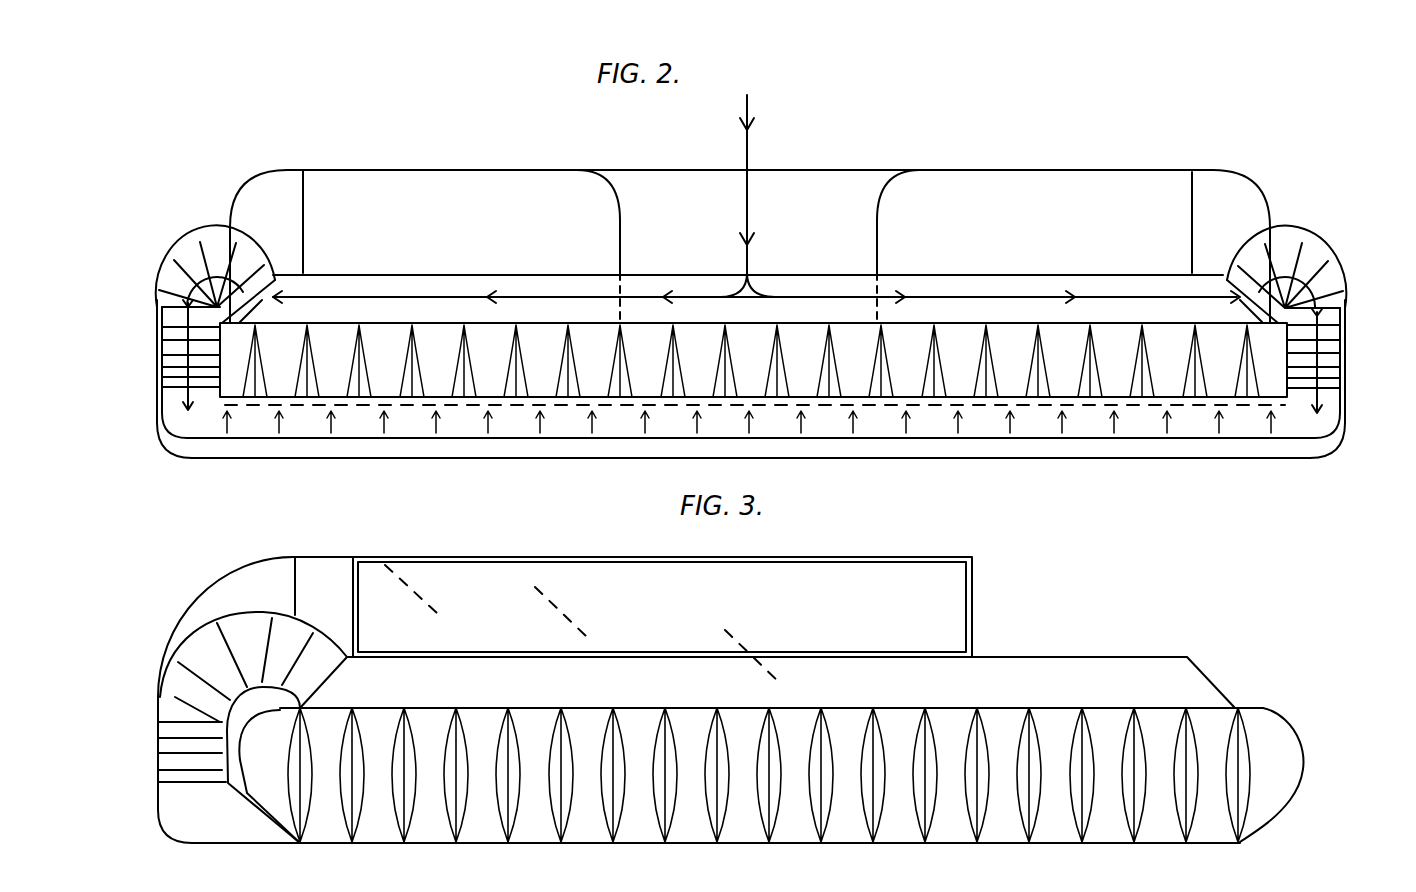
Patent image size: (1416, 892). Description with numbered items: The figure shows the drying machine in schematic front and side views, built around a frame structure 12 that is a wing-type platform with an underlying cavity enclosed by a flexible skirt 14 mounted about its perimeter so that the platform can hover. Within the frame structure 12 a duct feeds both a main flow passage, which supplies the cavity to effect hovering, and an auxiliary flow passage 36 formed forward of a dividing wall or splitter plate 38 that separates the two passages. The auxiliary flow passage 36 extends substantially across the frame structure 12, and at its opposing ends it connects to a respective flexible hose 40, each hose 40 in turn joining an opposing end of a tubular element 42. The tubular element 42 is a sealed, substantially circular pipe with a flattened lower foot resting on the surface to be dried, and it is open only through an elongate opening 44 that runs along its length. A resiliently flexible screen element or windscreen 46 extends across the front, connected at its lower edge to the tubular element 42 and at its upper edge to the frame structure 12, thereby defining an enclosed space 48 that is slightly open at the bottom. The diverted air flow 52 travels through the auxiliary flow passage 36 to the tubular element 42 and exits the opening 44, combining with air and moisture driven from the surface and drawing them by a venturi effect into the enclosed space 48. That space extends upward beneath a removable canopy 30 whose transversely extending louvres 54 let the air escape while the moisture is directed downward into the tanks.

In FIG. 3, the frame structure 12 is at (1140, 692).
In FIG. 2, the flexible skirt 14 is at (767, 366).
In FIG. 3, the flexible skirt 14 is at (285, 765).
In FIG. 3, the removable canopy 30 is at (903, 557).
In FIG. 2, the auxiliary flow passage 36 is at (765, 320).
In FIG. 2, the splitter plate 38 is at (817, 272).
In FIG. 2, the flexible hose 40 is at (1310, 265).
In FIG. 3, the flexible hose 40 is at (173, 708).
In FIG. 2, the tubular element 42 is at (1283, 452).
In FIG. 2, the elongate opening 44 is at (1090, 440).
In FIG. 2, the windscreen 46 is at (235, 198).
In FIG. 3, the windscreen 46 is at (207, 588).
In FIG. 3, the enclosed space 48 is at (283, 602).
In FIG. 2, the diverted air flow 52 is at (750, 107).
In FIG. 3, the louvres 54 is at (415, 590).